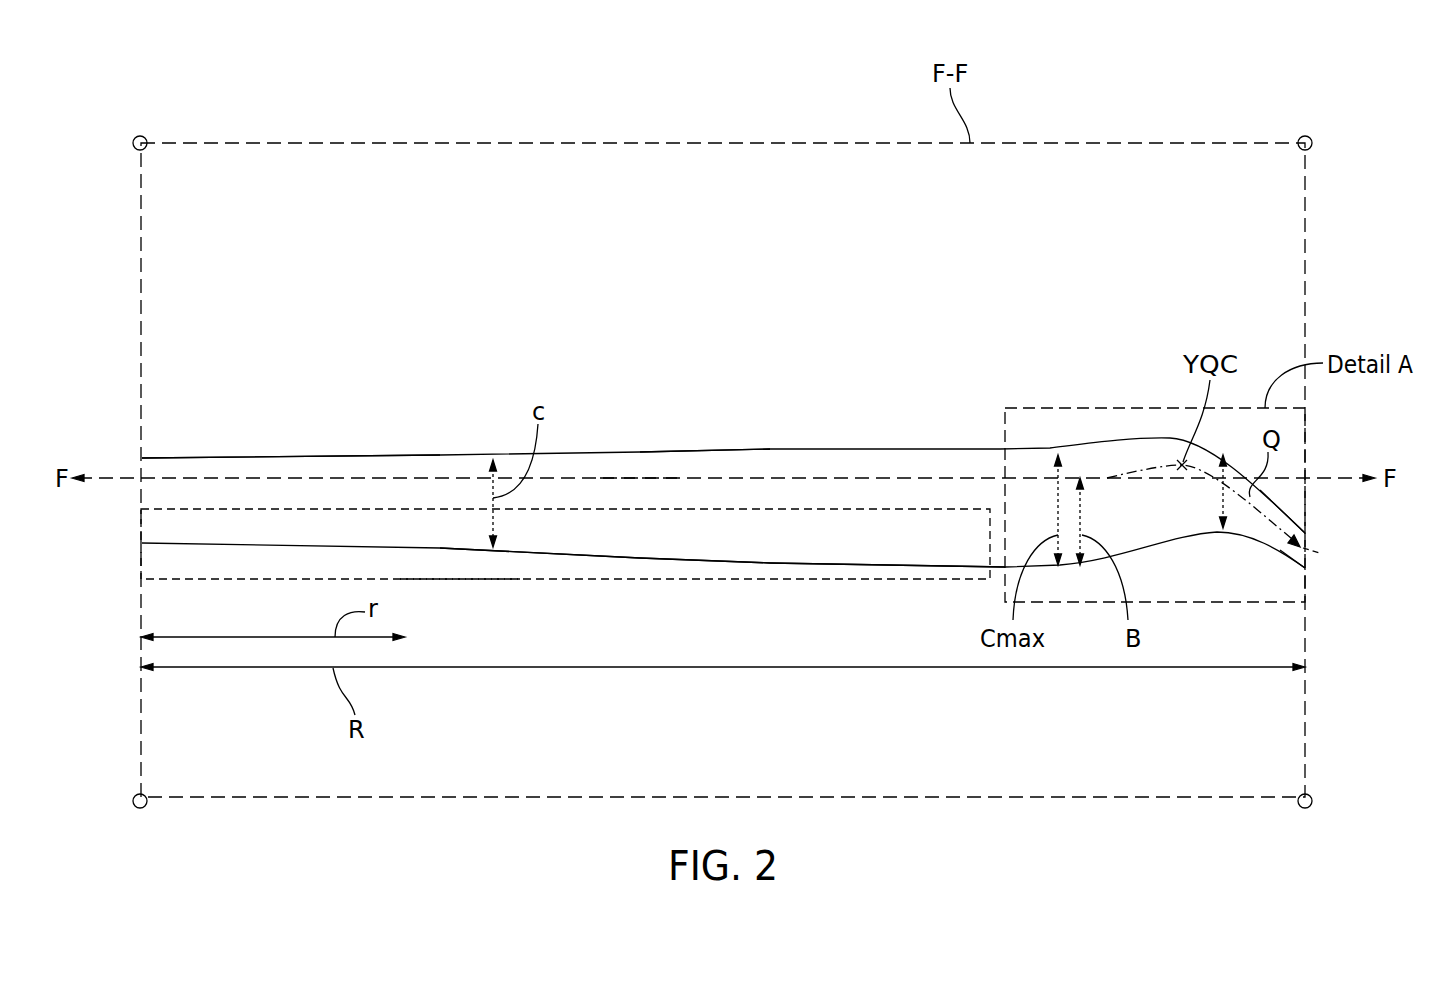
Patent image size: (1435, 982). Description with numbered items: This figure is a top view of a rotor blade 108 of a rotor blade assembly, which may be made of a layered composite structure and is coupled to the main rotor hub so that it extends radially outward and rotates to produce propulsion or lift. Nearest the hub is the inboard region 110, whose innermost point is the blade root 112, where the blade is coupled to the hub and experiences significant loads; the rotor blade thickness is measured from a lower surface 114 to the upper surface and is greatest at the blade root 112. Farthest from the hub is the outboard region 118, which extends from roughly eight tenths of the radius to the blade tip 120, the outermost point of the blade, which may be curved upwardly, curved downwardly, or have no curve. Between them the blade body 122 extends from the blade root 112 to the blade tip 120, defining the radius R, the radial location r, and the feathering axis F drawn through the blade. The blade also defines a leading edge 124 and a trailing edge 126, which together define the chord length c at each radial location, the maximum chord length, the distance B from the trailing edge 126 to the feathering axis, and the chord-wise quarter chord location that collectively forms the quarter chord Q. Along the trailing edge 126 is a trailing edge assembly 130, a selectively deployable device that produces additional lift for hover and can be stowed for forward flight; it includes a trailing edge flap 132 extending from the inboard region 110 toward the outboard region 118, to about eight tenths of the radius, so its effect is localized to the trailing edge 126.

The rotor blade 108 is at (113, 121).
The inboard region 110 is at (245, 440).
The blade root 112 is at (150, 513).
The lower surface 114 is at (805, 522).
The outboard region 118 is at (1040, 423).
The blade tip 120 is at (1305, 548).
The blade body 122 is at (637, 498).
The leading edge 124 is at (723, 450).
The trailing edge 126 is at (700, 560).
The trailing edge assembly 130 is at (461, 590).
The trailing edge flap 132 is at (580, 540).